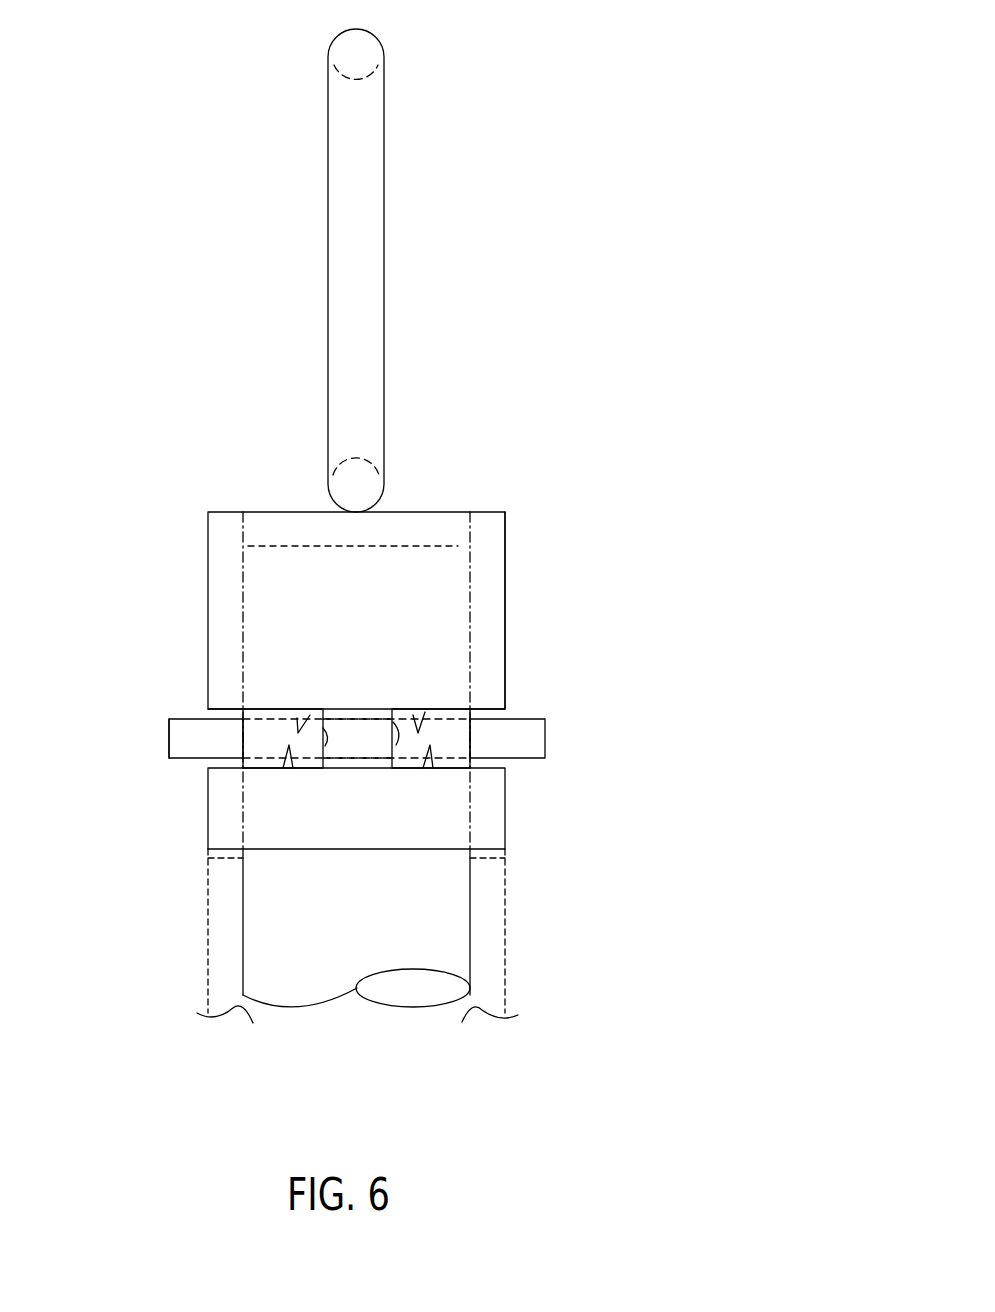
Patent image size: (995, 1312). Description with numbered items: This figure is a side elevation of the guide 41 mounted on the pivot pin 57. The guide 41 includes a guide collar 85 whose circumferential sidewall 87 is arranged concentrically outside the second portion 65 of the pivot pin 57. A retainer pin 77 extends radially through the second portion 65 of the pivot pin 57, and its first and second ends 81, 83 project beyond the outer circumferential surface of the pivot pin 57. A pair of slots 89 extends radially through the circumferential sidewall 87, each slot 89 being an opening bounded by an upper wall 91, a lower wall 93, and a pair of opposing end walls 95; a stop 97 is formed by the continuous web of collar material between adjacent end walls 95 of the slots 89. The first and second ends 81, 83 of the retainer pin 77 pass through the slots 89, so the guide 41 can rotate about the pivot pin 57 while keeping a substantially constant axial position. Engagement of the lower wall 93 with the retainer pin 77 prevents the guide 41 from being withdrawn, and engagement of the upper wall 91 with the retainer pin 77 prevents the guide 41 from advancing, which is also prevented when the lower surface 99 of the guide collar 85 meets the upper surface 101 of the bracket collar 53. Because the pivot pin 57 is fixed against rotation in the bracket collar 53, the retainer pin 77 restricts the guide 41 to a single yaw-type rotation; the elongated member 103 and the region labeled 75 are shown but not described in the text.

The guide 41 is at (627, 92).
The actuator rod 103 is at (386, 261).
The guide collar 85 is at (525, 532).
The circumferential sidewall 87 is at (493, 590).
The second end of retainer pin 83 is at (178, 738).
The first end of retainer pin 81 is at (537, 718).
The coupling 75 is at (125, 700).
The retainer pin 77 is at (182, 705).
The slots 89 is at (228, 772).
The upper wall 91 is at (297, 718).
The lower wall 93 is at (290, 768).
The end walls 95 is at (395, 715).
The stop 97 is at (358, 727).
The second portion of pivot pin 65 is at (445, 818).
The upper surface of bracket collar 101 is at (225, 858).
The lower surface of guide collar 99 is at (485, 852).
The bracket collar 53 is at (515, 952).
The pivot pin 57 is at (387, 1010).